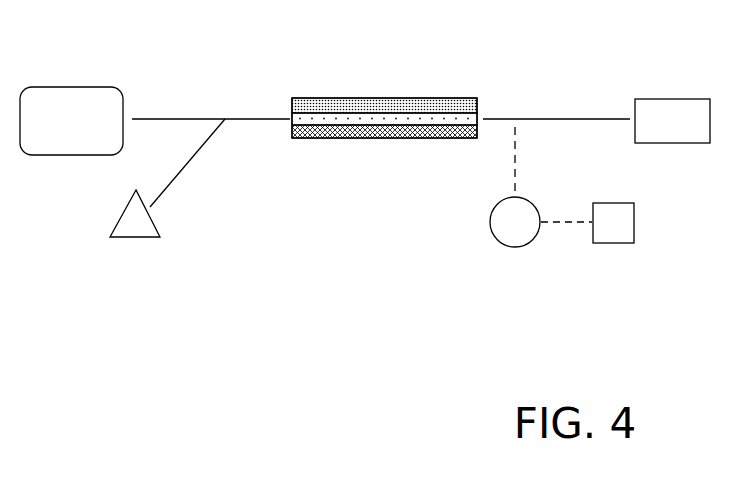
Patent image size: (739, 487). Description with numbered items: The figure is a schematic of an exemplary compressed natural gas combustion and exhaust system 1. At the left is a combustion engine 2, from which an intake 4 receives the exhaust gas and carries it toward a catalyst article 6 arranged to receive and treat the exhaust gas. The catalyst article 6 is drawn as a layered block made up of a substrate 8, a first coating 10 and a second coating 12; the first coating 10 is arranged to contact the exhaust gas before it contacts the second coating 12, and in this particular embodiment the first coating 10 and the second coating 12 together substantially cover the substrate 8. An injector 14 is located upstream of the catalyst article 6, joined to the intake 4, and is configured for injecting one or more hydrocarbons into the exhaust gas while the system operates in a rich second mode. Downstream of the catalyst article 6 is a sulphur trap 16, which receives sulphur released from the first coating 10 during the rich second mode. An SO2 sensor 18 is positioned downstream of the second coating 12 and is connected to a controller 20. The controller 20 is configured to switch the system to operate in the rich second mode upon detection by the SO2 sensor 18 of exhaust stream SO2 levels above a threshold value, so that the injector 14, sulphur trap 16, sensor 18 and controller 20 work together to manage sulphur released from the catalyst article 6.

The compressed natural gas combustion and exhaust system 1 is at (385, 275).
The combustion engine 2 is at (71, 137).
The intake 4 is at (381, 104).
The catalyst article 6 is at (388, 70).
The substrate 8 is at (443, 138).
The first coating 10 is at (310, 98).
The second coating 12 is at (334, 127).
The injector 14 is at (167, 194).
The sulphur trap 16 is at (672, 105).
The SO2 sensor 18 is at (515, 202).
The controller 20 is at (587, 240).